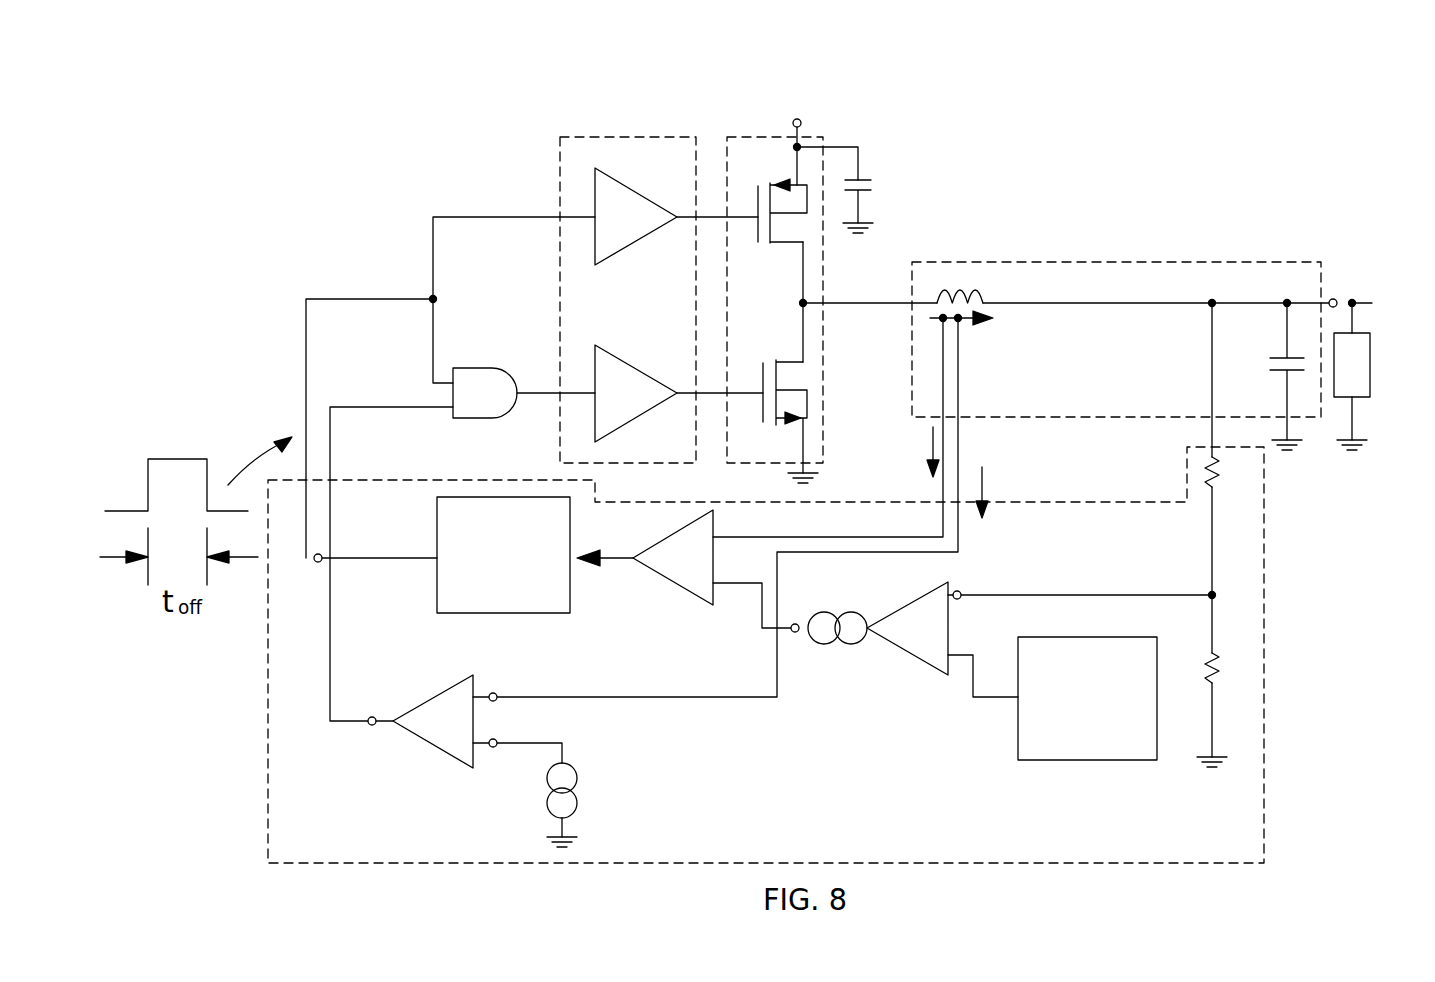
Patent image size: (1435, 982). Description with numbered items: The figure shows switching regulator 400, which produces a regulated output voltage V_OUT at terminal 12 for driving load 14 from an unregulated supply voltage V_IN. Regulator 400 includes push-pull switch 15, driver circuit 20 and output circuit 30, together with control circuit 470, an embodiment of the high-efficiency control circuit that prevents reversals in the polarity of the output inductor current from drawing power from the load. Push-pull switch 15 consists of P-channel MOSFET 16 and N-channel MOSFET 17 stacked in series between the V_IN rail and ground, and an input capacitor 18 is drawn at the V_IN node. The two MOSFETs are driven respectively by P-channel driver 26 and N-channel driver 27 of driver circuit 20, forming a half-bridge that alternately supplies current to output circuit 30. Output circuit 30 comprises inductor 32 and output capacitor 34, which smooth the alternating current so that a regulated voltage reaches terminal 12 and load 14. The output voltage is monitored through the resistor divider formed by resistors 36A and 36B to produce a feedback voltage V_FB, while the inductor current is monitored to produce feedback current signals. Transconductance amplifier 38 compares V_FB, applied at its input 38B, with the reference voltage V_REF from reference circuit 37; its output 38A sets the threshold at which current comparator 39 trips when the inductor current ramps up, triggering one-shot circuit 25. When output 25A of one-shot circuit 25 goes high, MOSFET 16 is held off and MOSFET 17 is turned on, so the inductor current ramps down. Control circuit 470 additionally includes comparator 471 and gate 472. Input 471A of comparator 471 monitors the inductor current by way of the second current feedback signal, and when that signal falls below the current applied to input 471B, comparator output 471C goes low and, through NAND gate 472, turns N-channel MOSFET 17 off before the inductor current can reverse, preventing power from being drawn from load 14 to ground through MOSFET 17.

The switching regulator 400 is at (664, 110).
The driver circuit 20 is at (597, 137).
The push-pull switch 15 is at (761, 137).
The load 14 is at (802, 122).
The input capacitor CIN 18 is at (861, 178).
The P-channel MOSFET 16 is at (782, 246).
The N-channel MOSFET 17 is at (783, 423).
The P-channel driver 26 is at (620, 250).
The N-channel driver 27 is at (638, 367).
The output circuit 30 is at (1068, 262).
The inductor 32 is at (984, 300).
The output terminal 12 is at (1333, 298).
The output capacitor 34 is at (1275, 357).
The NAND gate 472 is at (482, 368).
The one-shot circuit 25 is at (500, 615).
The one-shot circuit output 25A is at (316, 562).
The current comparator 39 is at (683, 595).
The transconductance amplifier 38 is at (906, 603).
The transconductance amplifier output 38A is at (797, 624).
The amplifier inverting input 38B is at (960, 591).
The reference circuit 37 is at (1100, 637).
The resistor R1 36A is at (1214, 488).
The resistor R2 36B is at (1214, 684).
The control circuit 470 is at (1265, 625).
The comparator 471 is at (427, 746).
The comparator input 471A is at (493, 701).
The comparator input 471B is at (493, 748).
The comparator output 471C is at (372, 725).